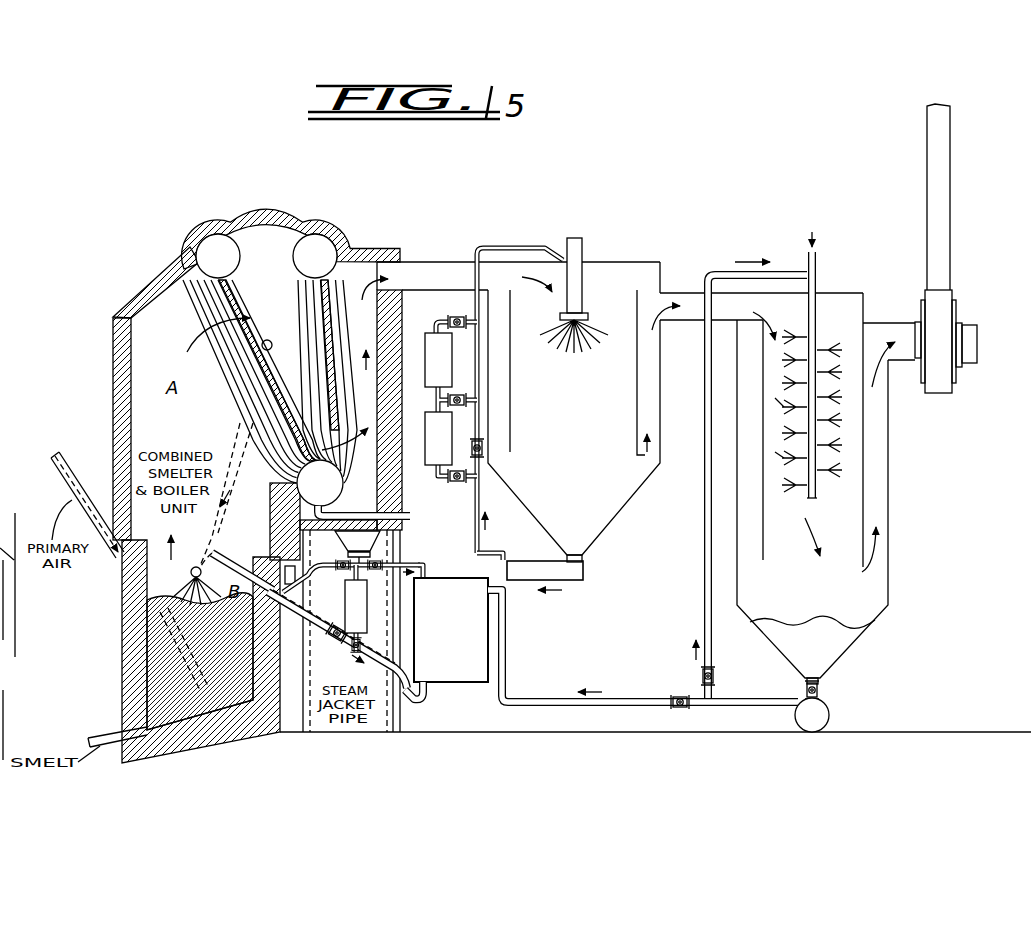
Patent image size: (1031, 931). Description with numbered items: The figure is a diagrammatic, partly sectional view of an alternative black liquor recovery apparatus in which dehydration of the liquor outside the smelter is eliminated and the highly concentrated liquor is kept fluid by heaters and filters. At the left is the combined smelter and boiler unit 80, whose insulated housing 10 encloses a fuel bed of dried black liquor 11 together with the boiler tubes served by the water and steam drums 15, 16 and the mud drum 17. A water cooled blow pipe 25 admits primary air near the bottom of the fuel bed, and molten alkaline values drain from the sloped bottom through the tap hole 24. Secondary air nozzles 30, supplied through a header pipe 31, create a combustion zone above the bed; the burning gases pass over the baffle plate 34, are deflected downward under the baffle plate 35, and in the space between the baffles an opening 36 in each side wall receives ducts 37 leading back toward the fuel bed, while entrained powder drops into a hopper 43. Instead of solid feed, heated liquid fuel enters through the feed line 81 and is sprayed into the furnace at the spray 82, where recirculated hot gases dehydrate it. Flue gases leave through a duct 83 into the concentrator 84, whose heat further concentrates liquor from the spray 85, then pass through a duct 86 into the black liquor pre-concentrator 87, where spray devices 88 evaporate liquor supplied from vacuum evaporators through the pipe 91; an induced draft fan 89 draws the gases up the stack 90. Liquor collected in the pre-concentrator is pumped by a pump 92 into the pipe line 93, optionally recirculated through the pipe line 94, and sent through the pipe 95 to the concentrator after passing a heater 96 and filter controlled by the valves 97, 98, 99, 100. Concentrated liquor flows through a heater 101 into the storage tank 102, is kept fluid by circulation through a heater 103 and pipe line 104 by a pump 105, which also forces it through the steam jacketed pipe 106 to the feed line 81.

The insulated housing 10 is at (113, 358).
The fuel bed of dried black liquor 11 is at (232, 700).
The water and steam drum 15 is at (218, 256).
The water and steam drum 16 is at (315, 256).
The mud drum 17 is at (320, 483).
The tap hole 24 is at (96, 738).
The water cooled blow pipe 25 is at (82, 436).
The secondary air nozzles 30 is at (236, 564).
The header pipe 31 is at (337, 639).
The baffle plate 34 is at (219, 479).
The baffle plate 35 is at (335, 332).
The opening 36 is at (269, 340).
The ducts 37 is at (223, 510).
The hopper 43 is at (345, 561).
The combined smelter and boiler unit 80 is at (108, 397).
The feed line 81 is at (250, 564).
The spray 82 is at (192, 586).
The duct 83 is at (432, 268).
The concentrator 84 is at (574, 412).
The spray 85 is at (586, 317).
The duct 86 is at (687, 312).
The black liquor pre-concentrator 87 is at (812, 485).
The spray devices 88 is at (827, 350).
The induced draft fan 89 is at (944, 386).
The stack 90 is at (940, 152).
The pipe 91 is at (811, 349).
The pump 92 is at (823, 712).
The pipe line 93 is at (742, 702).
The pipe line 94 is at (707, 557).
The pipe 95 is at (636, 697).
The heater 96 is at (430, 373).
The valve 97 is at (482, 456).
The valve 98 is at (456, 484).
The valve 99 is at (459, 393).
The valve 100 is at (455, 316).
The heater 101 is at (577, 580).
The concentrated black liquor storage tank 102 is at (474, 668).
The heater 103 is at (451, 630).
The pipe line 104 is at (427, 568).
The pump 105 is at (440, 707).
The steam jacketed pipe 106 is at (338, 618).